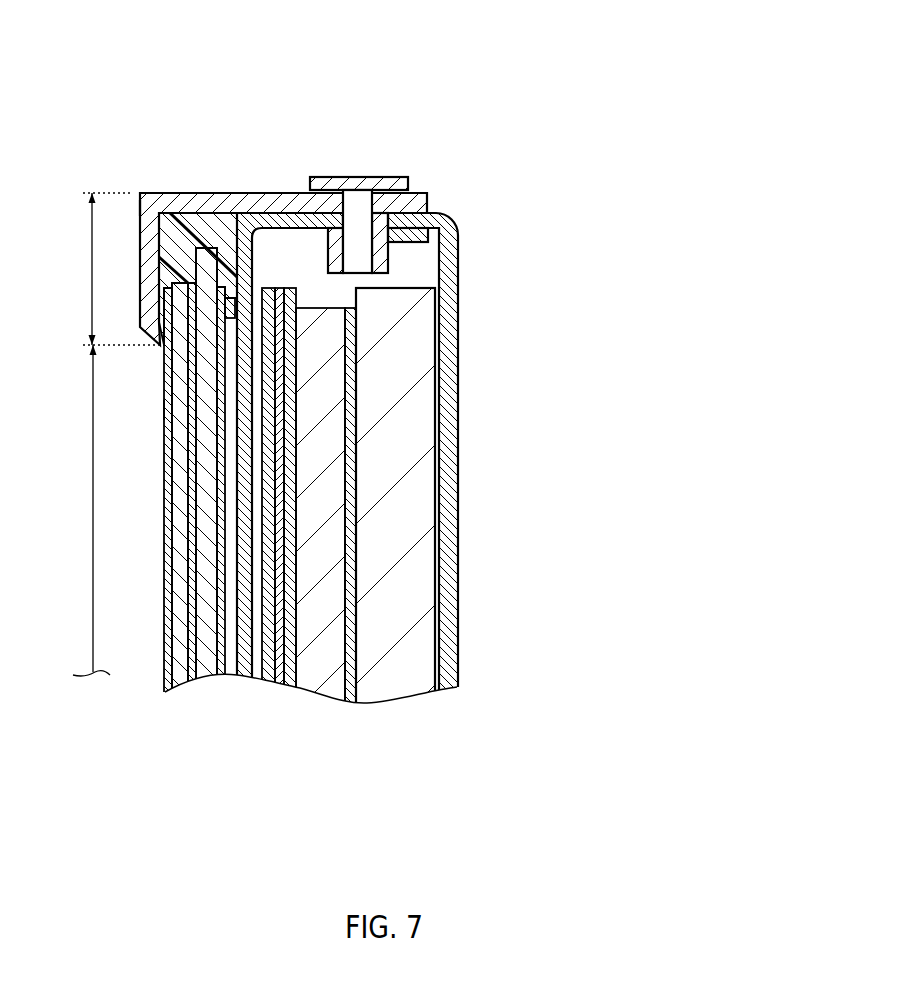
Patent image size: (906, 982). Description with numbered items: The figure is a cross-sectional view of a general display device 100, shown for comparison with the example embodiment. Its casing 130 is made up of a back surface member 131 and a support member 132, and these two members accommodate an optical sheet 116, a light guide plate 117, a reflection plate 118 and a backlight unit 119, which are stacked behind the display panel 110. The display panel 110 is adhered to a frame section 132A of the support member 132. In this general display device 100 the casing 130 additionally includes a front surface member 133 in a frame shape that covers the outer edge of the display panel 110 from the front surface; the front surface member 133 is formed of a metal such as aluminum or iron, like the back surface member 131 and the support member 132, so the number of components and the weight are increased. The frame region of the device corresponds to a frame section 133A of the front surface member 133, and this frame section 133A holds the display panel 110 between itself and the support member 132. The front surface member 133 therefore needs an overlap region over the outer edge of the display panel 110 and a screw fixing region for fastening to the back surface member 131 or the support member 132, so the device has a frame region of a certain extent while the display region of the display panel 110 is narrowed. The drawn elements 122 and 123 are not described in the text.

The display device 100 is at (520, 70).
The display panel 110 is at (346, 579).
The optical sheet 116 is at (298, 698).
The light guide plate 117 is at (320, 468).
The reflection plate 118 is at (355, 527).
The third layer of case wall 119 is at (398, 586).
The insulating member 122 is at (231, 210).
The electrode tab 123 is at (177, 205).
The casing 130 is at (531, 137).
The back surface member 131 is at (452, 236).
The support member 132 is at (430, 196).
The frame section 132A is at (255, 267).
The front surface member 133 is at (283, 190).
The frame section 133A is at (125, 205).